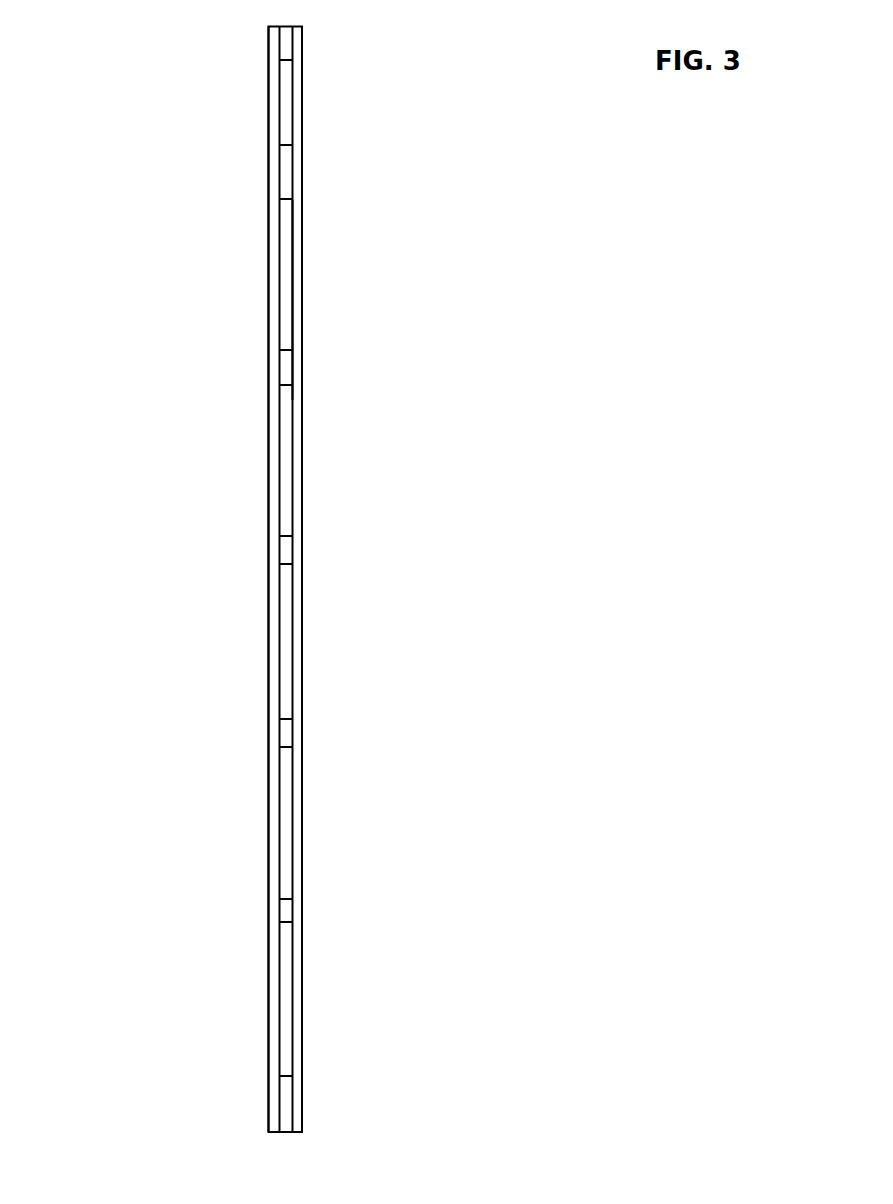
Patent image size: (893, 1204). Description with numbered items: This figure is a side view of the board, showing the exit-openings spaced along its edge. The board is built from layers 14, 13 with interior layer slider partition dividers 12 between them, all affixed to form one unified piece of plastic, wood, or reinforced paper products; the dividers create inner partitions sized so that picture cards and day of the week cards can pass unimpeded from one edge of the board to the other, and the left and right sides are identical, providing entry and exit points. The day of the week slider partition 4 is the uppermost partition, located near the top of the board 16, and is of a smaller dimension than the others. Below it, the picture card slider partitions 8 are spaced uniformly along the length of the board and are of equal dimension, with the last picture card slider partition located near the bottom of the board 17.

The top of the board 16 is at (268, 27).
The day of the week slider partition 4 is at (292, 97).
The picture card slider partition 8 is at (292, 279).
The interior layer slider partition divider 12 is at (292, 545).
The board layer 13 is at (292, 910).
The board layer 14 is at (268, 607).
The bottom of the board 17 is at (302, 1132).